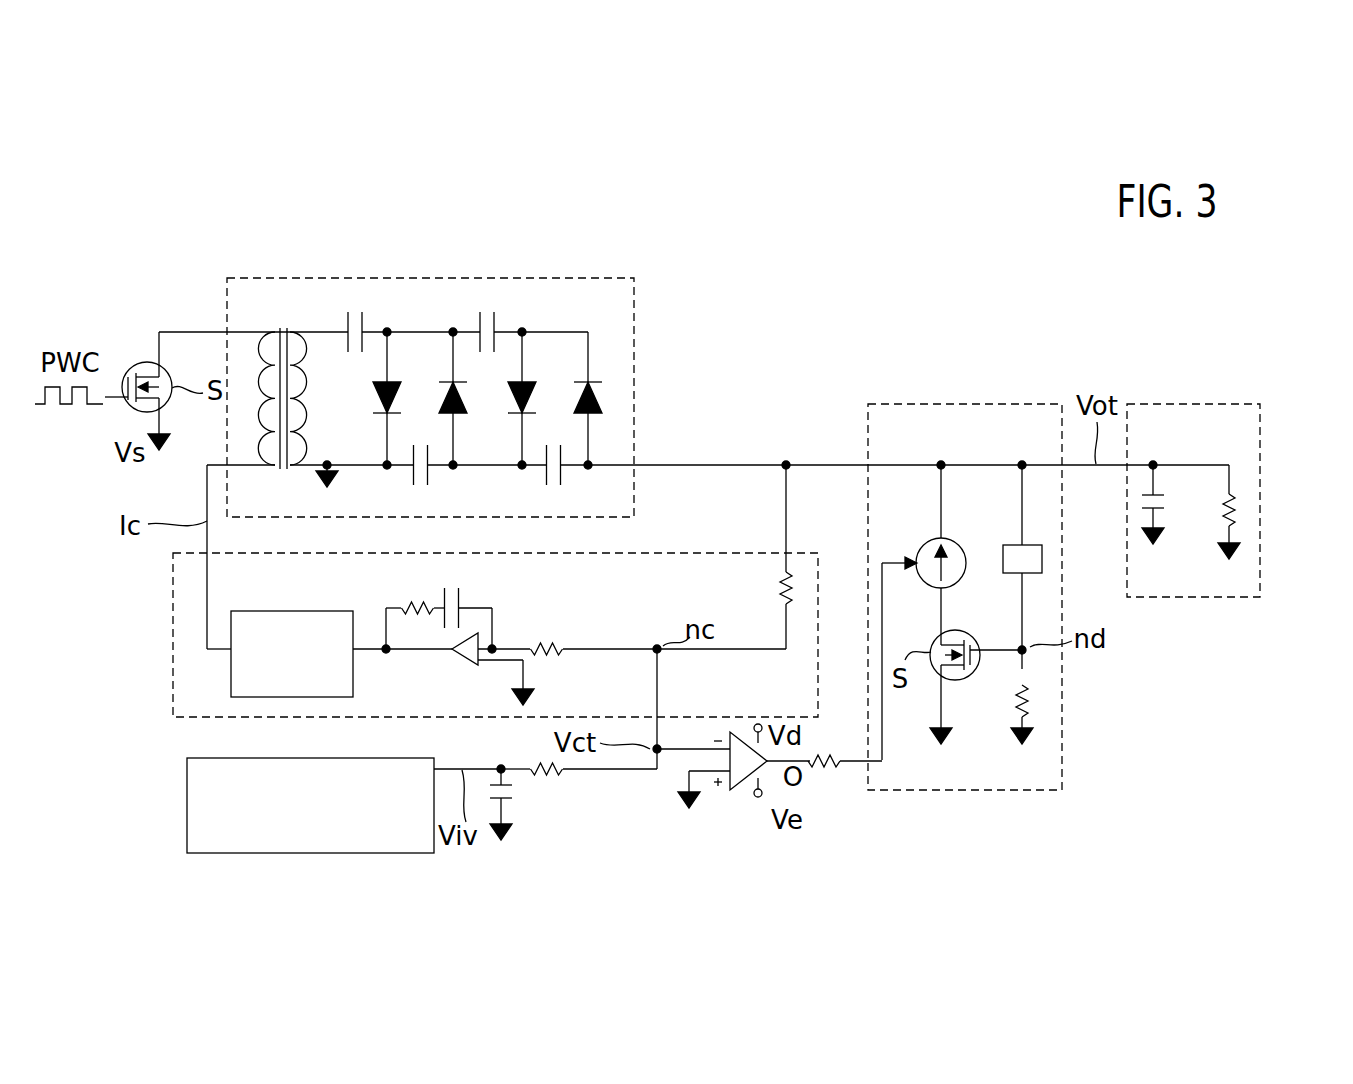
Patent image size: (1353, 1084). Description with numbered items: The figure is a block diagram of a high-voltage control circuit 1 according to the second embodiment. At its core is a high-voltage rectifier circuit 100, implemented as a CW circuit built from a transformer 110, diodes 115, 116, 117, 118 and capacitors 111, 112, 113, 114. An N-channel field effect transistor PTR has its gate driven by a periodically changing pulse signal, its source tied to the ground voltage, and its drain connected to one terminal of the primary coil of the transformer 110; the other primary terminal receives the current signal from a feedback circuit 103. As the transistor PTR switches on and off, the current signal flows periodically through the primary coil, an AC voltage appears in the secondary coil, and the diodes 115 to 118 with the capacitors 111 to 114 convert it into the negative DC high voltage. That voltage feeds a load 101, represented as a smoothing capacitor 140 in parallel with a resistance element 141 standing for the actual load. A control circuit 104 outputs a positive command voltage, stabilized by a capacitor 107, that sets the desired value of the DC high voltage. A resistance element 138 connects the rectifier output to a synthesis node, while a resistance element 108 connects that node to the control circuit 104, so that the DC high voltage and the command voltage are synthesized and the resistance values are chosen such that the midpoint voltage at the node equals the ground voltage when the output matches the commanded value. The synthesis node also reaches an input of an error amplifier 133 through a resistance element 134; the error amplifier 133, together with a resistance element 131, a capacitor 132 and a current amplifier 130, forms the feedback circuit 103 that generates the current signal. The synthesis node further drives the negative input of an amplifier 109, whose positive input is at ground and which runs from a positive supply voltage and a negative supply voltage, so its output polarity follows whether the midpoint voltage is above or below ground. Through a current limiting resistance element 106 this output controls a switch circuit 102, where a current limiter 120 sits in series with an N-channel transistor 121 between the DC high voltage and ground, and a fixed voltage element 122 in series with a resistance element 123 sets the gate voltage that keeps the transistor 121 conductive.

The high-voltage control circuit 1 is at (812, 308).
The high-voltage rectifier circuit 100 is at (634, 296).
The load 101 is at (1185, 403).
The switch circuit 102 is at (977, 403).
The feedback circuit 103 is at (173, 601).
The control circuit 104 is at (187, 808).
The current limiting resistance element 106 is at (836, 775).
The capacitor 107 is at (512, 780).
The resistance element 108 is at (569, 786).
The amplifier 109 is at (740, 790).
The transformer 110 is at (287, 322).
The capacitor 111 is at (355, 312).
The capacitor 112 is at (487, 312).
The capacitor 113 is at (418, 488).
The capacitor 114 is at (548, 488).
The diode 115 is at (395, 378).
The diode 116 is at (462, 420).
The diode 117 is at (530, 378).
The diode 118 is at (604, 404).
The current limiter 120 is at (917, 553).
The N-channel transistor 121 is at (969, 634).
The fixed voltage element 122 is at (1043, 556).
The resistance element 123 is at (1032, 687).
The current amplifier 130 is at (231, 675).
The resistance element 131 is at (403, 600).
The capacitor 132 is at (459, 597).
The error amplifier 133 is at (458, 680).
The resistance element 134 is at (556, 635).
The resistance element 138 is at (776, 588).
The smoothing capacitor 140 is at (1165, 512).
The resistance element 141 is at (1240, 503).
The N-channel field effect transistor PTR is at (137, 360).